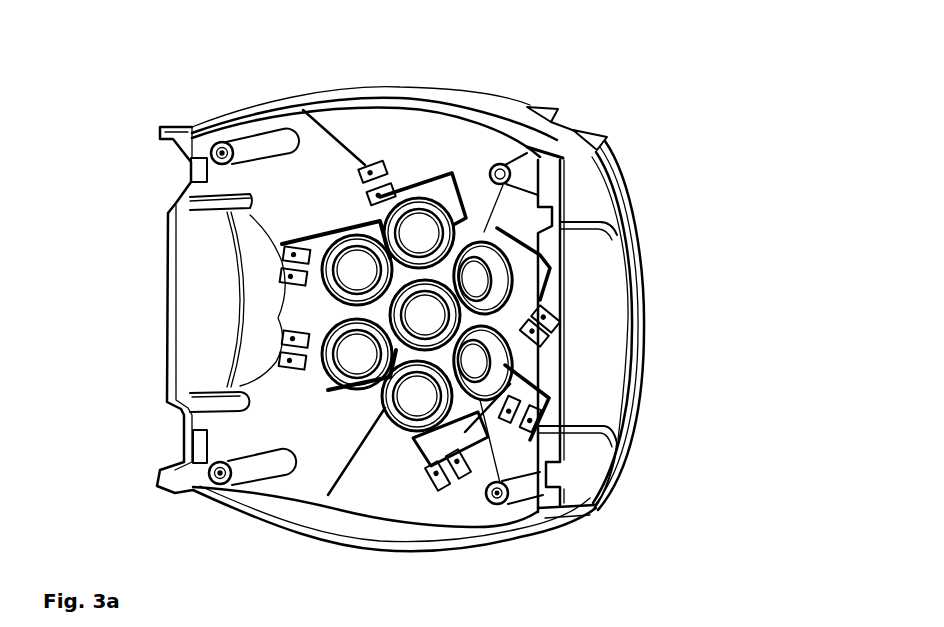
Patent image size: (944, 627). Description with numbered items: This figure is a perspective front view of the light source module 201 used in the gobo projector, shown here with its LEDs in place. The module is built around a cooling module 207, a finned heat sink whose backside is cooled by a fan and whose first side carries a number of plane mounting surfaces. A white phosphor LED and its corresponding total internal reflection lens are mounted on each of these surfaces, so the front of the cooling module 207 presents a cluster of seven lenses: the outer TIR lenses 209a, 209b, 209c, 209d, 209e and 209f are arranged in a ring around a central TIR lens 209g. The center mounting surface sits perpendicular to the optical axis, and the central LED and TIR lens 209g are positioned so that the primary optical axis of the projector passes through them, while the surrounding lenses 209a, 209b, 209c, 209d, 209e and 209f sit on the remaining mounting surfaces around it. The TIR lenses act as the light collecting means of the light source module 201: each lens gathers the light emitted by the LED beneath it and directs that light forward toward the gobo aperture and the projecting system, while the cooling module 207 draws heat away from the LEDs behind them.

The light source module 201 is at (632, 58).
The cooling module 207 is at (577, 277).
The TIR lens 209a is at (415, 237).
The TIR lens 209b is at (490, 283).
The TIR lens 209c is at (477, 357).
The TIR lens 209d is at (405, 400).
The TIR lens 209e is at (347, 350).
The TIR lens 209f is at (323, 255).
The TIR lens 209g is at (357, 247).